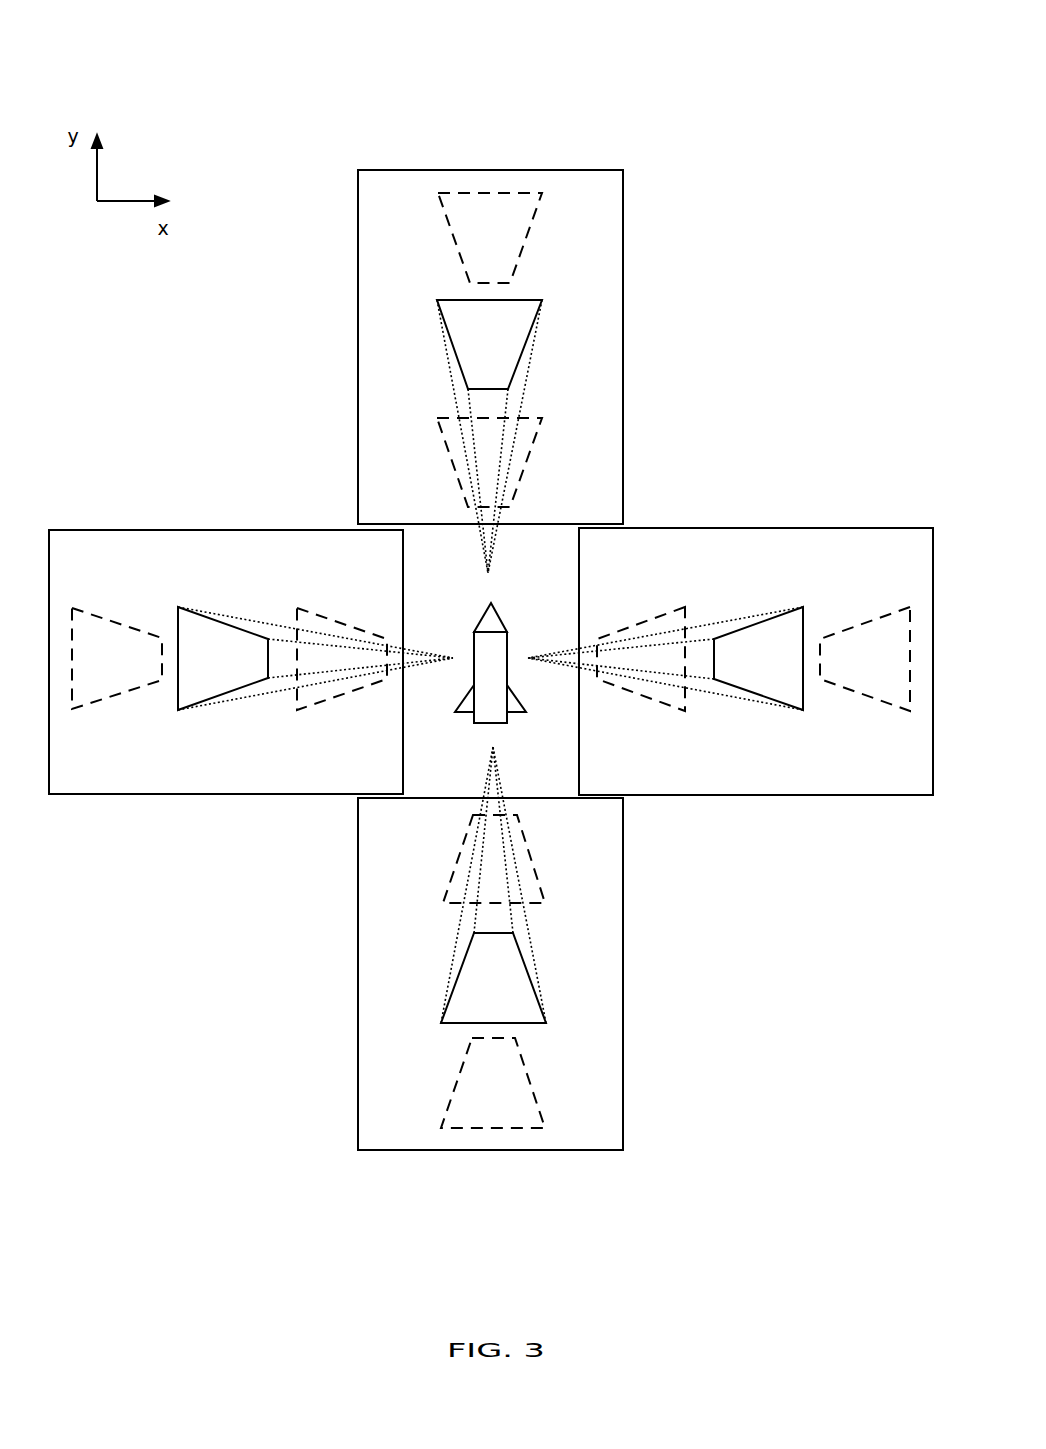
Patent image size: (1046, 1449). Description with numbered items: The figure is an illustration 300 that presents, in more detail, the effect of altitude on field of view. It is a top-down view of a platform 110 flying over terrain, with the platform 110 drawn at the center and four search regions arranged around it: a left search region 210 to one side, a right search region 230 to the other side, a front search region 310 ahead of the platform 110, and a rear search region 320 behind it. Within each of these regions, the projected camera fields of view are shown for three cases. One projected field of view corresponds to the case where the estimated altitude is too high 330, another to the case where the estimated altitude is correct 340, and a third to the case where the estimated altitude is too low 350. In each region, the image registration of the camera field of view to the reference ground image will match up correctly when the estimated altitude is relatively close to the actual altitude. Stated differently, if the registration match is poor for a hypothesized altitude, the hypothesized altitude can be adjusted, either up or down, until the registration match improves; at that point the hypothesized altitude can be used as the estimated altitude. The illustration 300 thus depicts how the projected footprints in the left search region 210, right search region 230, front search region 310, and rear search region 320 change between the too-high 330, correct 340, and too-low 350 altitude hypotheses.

The illustration 300 is at (468, 47).
The platform 110 is at (439, 622).
The left search region 210 is at (77, 506).
The right search region 230 is at (891, 509).
The front search region 310 is at (702, 191).
The rear search region 320 is at (730, 1181).
The estimated altitude too high 330 is at (384, 1104).
The estimated altitude correct 340 is at (384, 1003).
The estimated altitude too low 350 is at (429, 874).